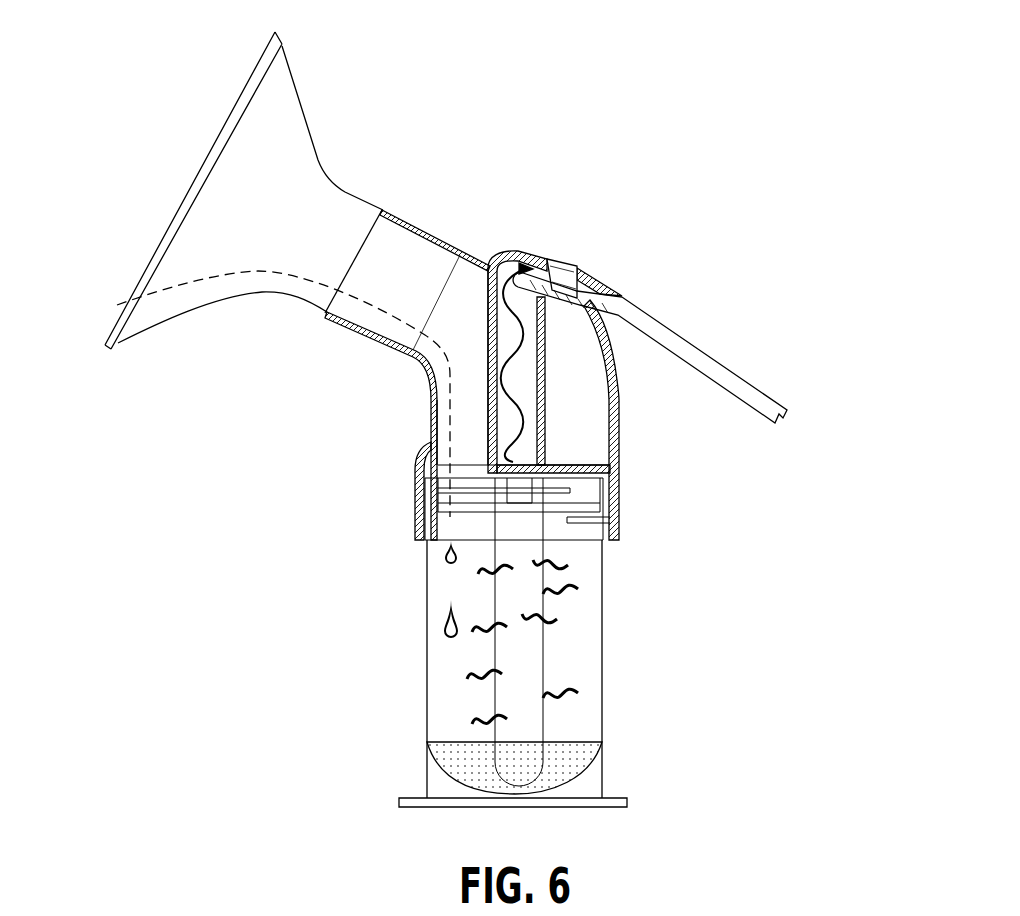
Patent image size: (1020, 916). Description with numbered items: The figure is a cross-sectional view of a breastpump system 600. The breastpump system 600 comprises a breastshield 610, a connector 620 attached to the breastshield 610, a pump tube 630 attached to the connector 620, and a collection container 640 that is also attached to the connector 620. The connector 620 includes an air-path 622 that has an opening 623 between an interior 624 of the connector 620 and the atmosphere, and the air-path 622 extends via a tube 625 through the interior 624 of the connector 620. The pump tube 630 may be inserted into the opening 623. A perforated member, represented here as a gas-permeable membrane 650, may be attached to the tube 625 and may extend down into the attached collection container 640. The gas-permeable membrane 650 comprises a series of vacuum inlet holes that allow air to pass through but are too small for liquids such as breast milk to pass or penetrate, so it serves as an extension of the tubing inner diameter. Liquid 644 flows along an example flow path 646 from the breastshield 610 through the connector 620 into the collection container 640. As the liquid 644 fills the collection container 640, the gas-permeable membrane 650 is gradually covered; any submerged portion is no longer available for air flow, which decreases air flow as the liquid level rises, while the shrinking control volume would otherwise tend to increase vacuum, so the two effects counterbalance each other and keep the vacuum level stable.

The breastpump system 600 is at (668, 122).
The breastshield 610 is at (297, 177).
The connector 620 is at (401, 255).
The air-path 622 is at (539, 434).
The opening 623 is at (576, 272).
The interior 624 is at (472, 433).
The tube 625 is at (533, 458).
The pump tube 630 is at (674, 336).
The collection container 640 is at (578, 716).
The liquid 644 is at (421, 368).
The flow path 646 is at (121, 298).
The gas-permeable membrane 650 is at (533, 658).